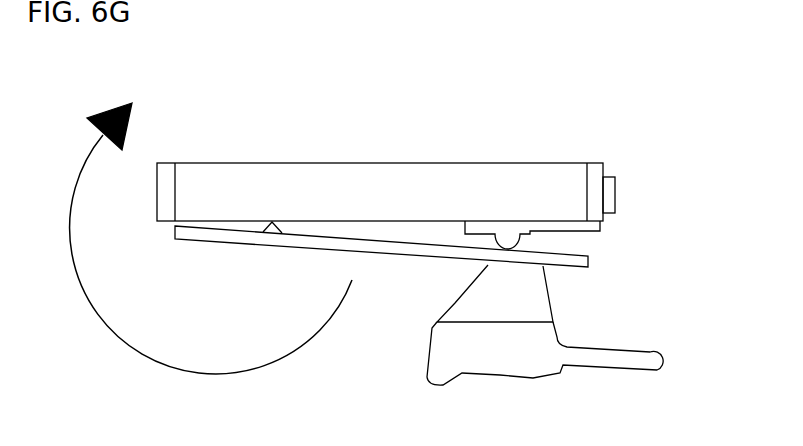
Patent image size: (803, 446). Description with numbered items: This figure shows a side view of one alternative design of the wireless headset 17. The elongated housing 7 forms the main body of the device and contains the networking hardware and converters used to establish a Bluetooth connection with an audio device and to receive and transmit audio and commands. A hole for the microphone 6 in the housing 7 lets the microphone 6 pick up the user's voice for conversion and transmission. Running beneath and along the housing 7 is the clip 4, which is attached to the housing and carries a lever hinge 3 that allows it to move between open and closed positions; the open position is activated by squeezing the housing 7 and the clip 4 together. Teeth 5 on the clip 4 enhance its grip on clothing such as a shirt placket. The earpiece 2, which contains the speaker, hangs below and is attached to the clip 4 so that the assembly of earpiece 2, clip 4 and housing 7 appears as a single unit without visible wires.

The earpiece 2 is at (503, 280).
The lever hinge 3 is at (505, 236).
The clip 4 is at (372, 255).
The teeth 5 is at (272, 232).
The microphone 6 is at (217, 202).
The housing 7 is at (305, 190).
The wireless headset 17 is at (682, 244).